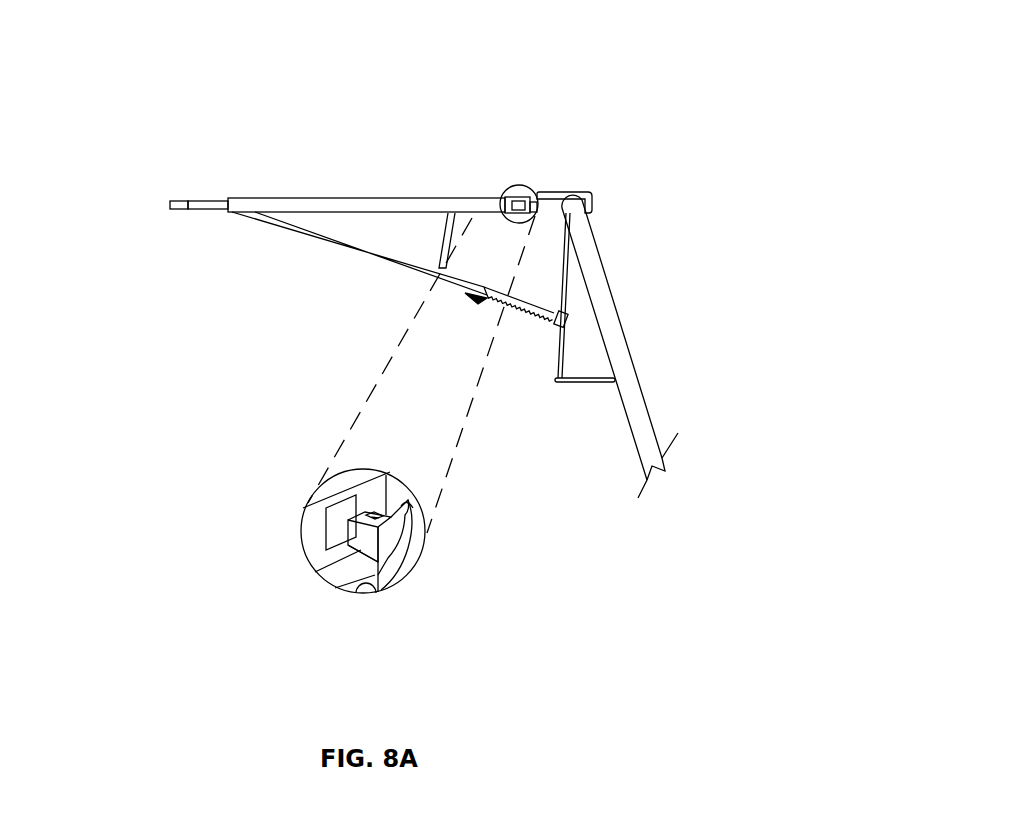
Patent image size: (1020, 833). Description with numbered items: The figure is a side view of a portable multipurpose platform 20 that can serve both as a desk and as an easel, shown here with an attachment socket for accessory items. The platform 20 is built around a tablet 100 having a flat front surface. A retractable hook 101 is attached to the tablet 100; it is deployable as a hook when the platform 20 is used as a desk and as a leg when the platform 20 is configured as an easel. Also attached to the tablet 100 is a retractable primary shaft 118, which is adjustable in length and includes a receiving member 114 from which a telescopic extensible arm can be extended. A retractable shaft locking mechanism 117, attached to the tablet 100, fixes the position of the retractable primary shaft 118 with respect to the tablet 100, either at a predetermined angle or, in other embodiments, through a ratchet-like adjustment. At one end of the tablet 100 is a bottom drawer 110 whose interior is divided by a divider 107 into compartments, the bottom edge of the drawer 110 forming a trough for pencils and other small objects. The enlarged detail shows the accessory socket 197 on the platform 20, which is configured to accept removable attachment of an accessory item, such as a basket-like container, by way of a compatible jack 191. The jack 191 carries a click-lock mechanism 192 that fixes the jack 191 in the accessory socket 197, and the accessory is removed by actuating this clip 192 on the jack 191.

The multipurpose platform 20 is at (158, 102).
The tablet 100 is at (380, 198).
The retractable hook 101 is at (550, 191).
The divider 107 is at (205, 200).
The bottom drawer 110 is at (176, 199).
The receiving member 114 is at (300, 233).
The retractable shaft locking mechanism 117 is at (442, 250).
The retractable primary shaft 118 is at (387, 272).
The jack 191 is at (363, 540).
The click-lock mechanism 192 is at (387, 515).
The accessory socket 197 is at (378, 478).